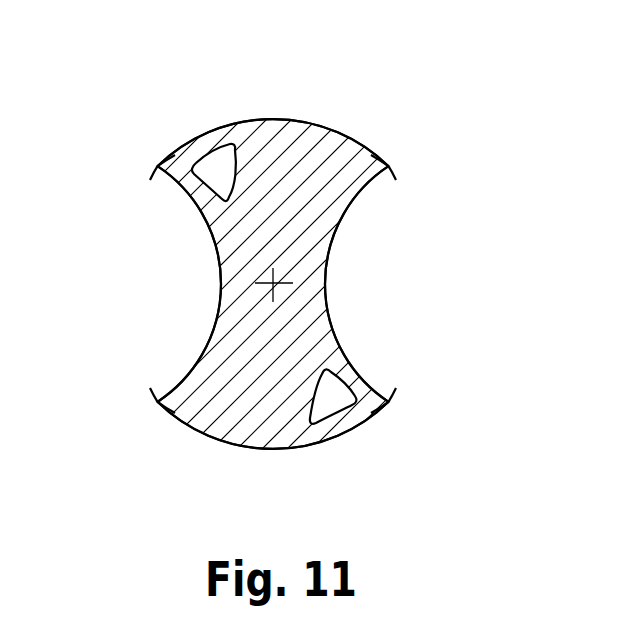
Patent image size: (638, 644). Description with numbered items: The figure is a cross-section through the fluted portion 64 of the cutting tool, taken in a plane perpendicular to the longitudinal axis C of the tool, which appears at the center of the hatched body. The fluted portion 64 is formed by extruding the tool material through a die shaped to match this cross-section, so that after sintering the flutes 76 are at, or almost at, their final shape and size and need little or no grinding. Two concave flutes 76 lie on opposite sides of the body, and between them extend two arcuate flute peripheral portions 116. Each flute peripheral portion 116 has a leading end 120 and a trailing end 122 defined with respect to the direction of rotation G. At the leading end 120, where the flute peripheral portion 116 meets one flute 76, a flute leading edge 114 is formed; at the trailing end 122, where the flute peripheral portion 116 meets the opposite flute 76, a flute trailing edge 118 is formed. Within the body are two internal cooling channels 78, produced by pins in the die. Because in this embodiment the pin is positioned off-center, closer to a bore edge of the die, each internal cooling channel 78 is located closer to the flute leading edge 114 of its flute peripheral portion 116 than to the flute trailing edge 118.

The fluted portion 64 is at (412, 220).
The flutes 76 is at (207, 267).
The internal cooling channels 78 is at (219, 176).
The flute leading edge 114 is at (158, 166).
The flute peripheral portion 116 is at (330, 122).
The flute trailing edge 118 is at (388, 166).
The leading end 120 is at (161, 146).
The trailing end 122 is at (385, 158).
The longitudinal axis C is at (275, 283).
The direction of rotation G is at (317, 70).